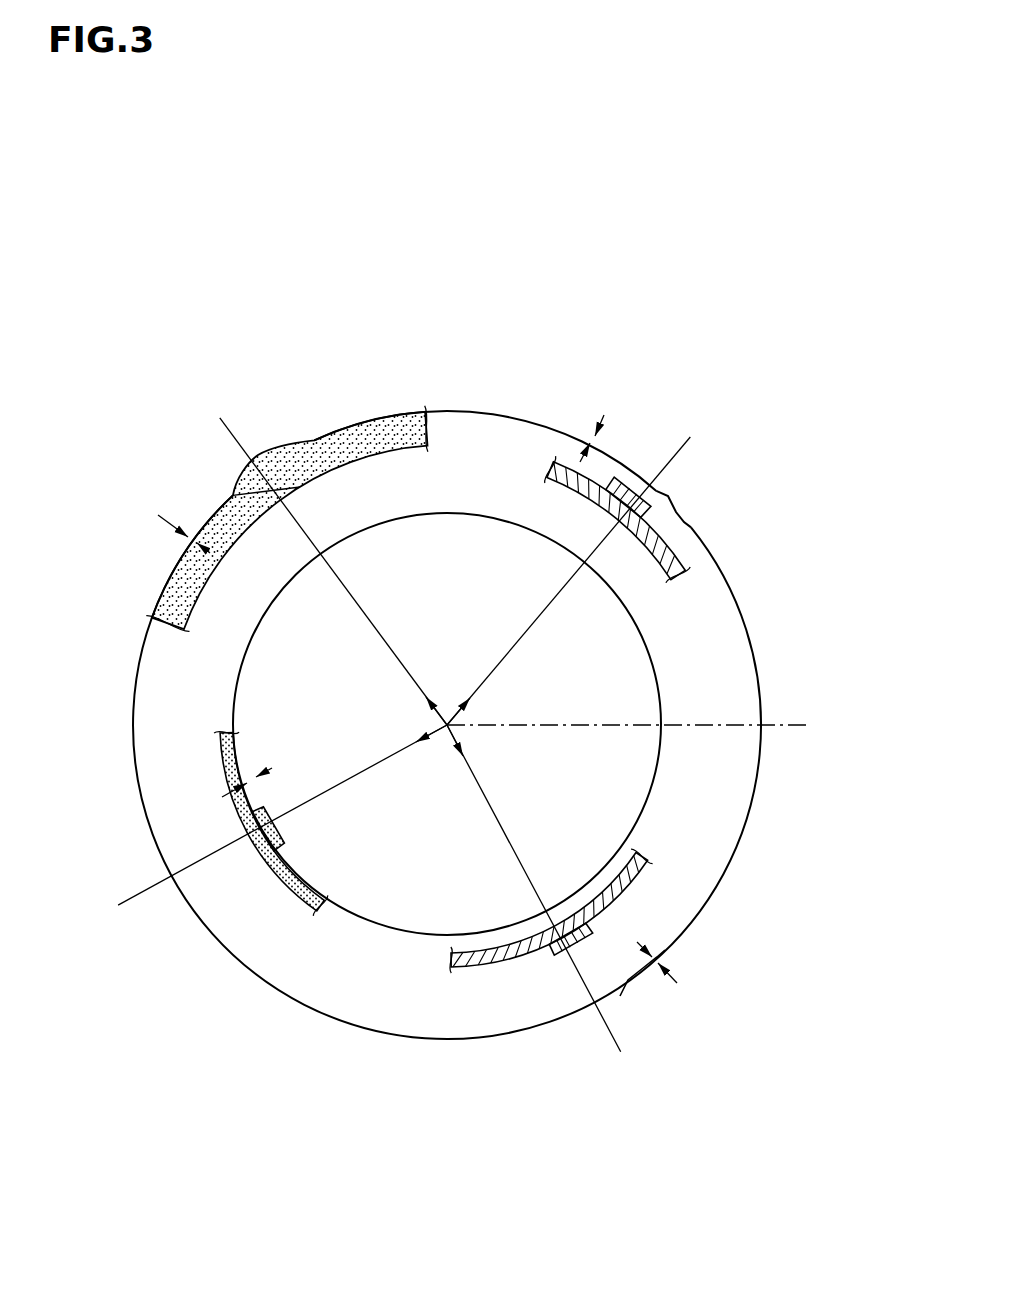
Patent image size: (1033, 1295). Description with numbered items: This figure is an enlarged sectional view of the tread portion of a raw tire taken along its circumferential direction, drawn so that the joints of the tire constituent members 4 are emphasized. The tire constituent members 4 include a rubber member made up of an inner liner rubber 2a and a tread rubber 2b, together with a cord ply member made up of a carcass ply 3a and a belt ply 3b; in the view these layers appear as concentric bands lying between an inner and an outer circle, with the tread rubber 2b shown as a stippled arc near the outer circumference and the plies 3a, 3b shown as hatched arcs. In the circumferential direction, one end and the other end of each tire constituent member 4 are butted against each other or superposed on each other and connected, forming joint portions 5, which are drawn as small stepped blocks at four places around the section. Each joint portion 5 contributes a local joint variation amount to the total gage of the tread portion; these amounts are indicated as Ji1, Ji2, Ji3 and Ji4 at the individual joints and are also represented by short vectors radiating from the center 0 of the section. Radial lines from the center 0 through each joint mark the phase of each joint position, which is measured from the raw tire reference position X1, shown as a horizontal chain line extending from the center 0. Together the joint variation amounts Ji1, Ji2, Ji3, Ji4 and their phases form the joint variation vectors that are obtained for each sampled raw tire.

The inner liner rubber 2a is at (272, 859).
The tread rubber 2b is at (299, 468).
The carcass ply 3a is at (483, 960).
The belt ply 3b is at (697, 562).
The tire constituent members 4 is at (393, 430).
The joint portions 5 is at (230, 464).
The joint variation amount Ji1 is at (458, 721).
The joint variation amount Ji2 is at (438, 712).
The joint variation amount Ji3 is at (435, 733).
The joint variation amount Ji4 is at (455, 735).
The rotation center 0 is at (676, 728).
The raw tire reference position X1 is at (676, 728).